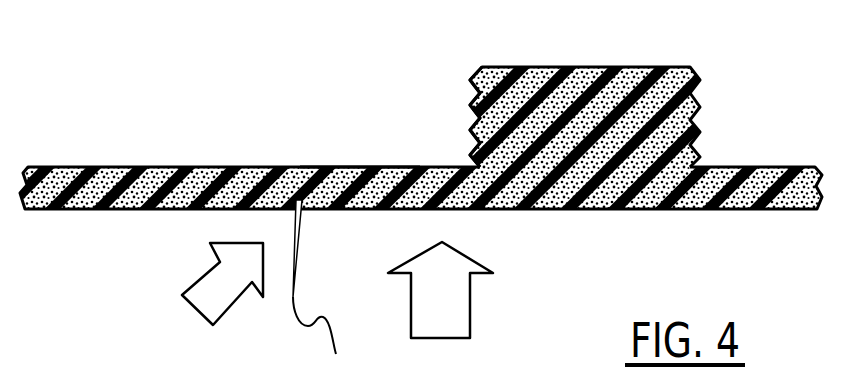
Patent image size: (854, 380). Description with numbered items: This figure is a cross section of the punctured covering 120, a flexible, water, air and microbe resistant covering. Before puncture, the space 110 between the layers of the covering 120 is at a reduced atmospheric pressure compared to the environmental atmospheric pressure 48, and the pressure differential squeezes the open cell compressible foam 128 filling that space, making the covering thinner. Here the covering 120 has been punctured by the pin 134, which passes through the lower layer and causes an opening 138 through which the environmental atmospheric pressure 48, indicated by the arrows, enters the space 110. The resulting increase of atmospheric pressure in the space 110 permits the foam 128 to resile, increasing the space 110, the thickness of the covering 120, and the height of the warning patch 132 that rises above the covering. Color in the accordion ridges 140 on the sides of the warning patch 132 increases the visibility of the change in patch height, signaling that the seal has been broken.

The space 110 is at (61, 166).
The covering 120 is at (158, 165).
The open cell compressible foam 128 is at (273, 178).
The warning patch 132 is at (601, 67).
The pin 134 is at (300, 233).
The opening 138 is at (360, 131).
The accordion ridges 140 is at (478, 93).
The environmental atmospheric pressure 48 is at (218, 268).